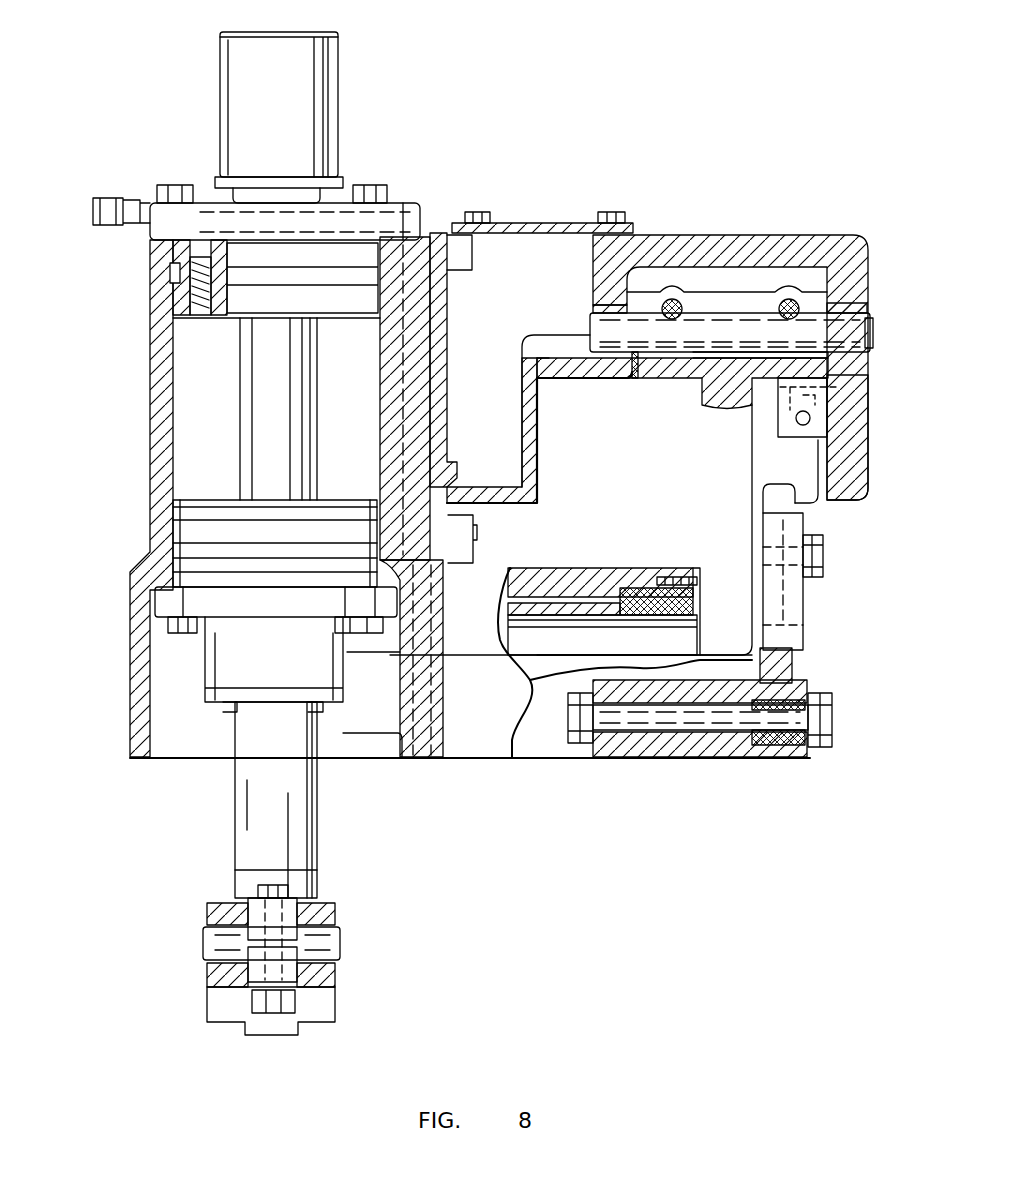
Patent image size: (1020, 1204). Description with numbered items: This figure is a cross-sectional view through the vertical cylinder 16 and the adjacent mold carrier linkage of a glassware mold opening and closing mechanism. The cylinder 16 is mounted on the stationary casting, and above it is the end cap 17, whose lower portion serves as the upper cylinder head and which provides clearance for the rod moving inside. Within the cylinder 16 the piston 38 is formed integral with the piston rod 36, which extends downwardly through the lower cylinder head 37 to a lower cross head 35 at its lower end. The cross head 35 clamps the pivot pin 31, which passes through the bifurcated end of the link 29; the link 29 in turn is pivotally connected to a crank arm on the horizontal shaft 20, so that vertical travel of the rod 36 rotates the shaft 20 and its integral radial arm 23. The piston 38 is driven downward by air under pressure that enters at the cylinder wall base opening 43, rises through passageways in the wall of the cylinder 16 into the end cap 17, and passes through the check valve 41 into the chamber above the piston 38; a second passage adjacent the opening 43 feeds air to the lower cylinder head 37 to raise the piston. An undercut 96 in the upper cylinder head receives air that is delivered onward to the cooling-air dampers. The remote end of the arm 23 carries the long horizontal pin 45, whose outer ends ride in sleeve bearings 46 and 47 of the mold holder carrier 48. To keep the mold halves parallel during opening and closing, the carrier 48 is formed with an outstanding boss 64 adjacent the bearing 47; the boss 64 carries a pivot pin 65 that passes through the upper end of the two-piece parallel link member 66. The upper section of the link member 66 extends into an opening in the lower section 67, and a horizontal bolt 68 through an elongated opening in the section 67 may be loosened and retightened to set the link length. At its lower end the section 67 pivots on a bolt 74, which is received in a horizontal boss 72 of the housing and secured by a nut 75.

The vertical cylinder 16 is at (153, 437).
The end cap 17 is at (307, 102).
The horizontal shaft 20 is at (624, 649).
The radial arm 23 is at (713, 472).
The link 29 is at (337, 913).
The pivot pin 31 is at (330, 940).
The lower cross head 35 is at (292, 908).
The piston rod 36 is at (318, 822).
The lower cylinder head 37 is at (168, 602).
The piston 38 is at (215, 520).
The check valve 41 is at (173, 308).
The cylinder wall base opening 43 is at (425, 758).
The horizontal pin 45 is at (867, 335).
The sleeve bearing 46 is at (593, 310).
The sleeve bearing 47 is at (870, 310).
The mold holder carrier 48 is at (718, 240).
The boss 64 is at (865, 453).
The pivot pin 65 is at (780, 398).
The parallel link member 66 is at (795, 492).
The lower section 67 is at (795, 642).
The bolt 68 is at (825, 572).
The boss 72 is at (677, 750).
The bolt 74 is at (832, 725).
The nut 75 is at (580, 743).
The undercut 96 is at (417, 237).